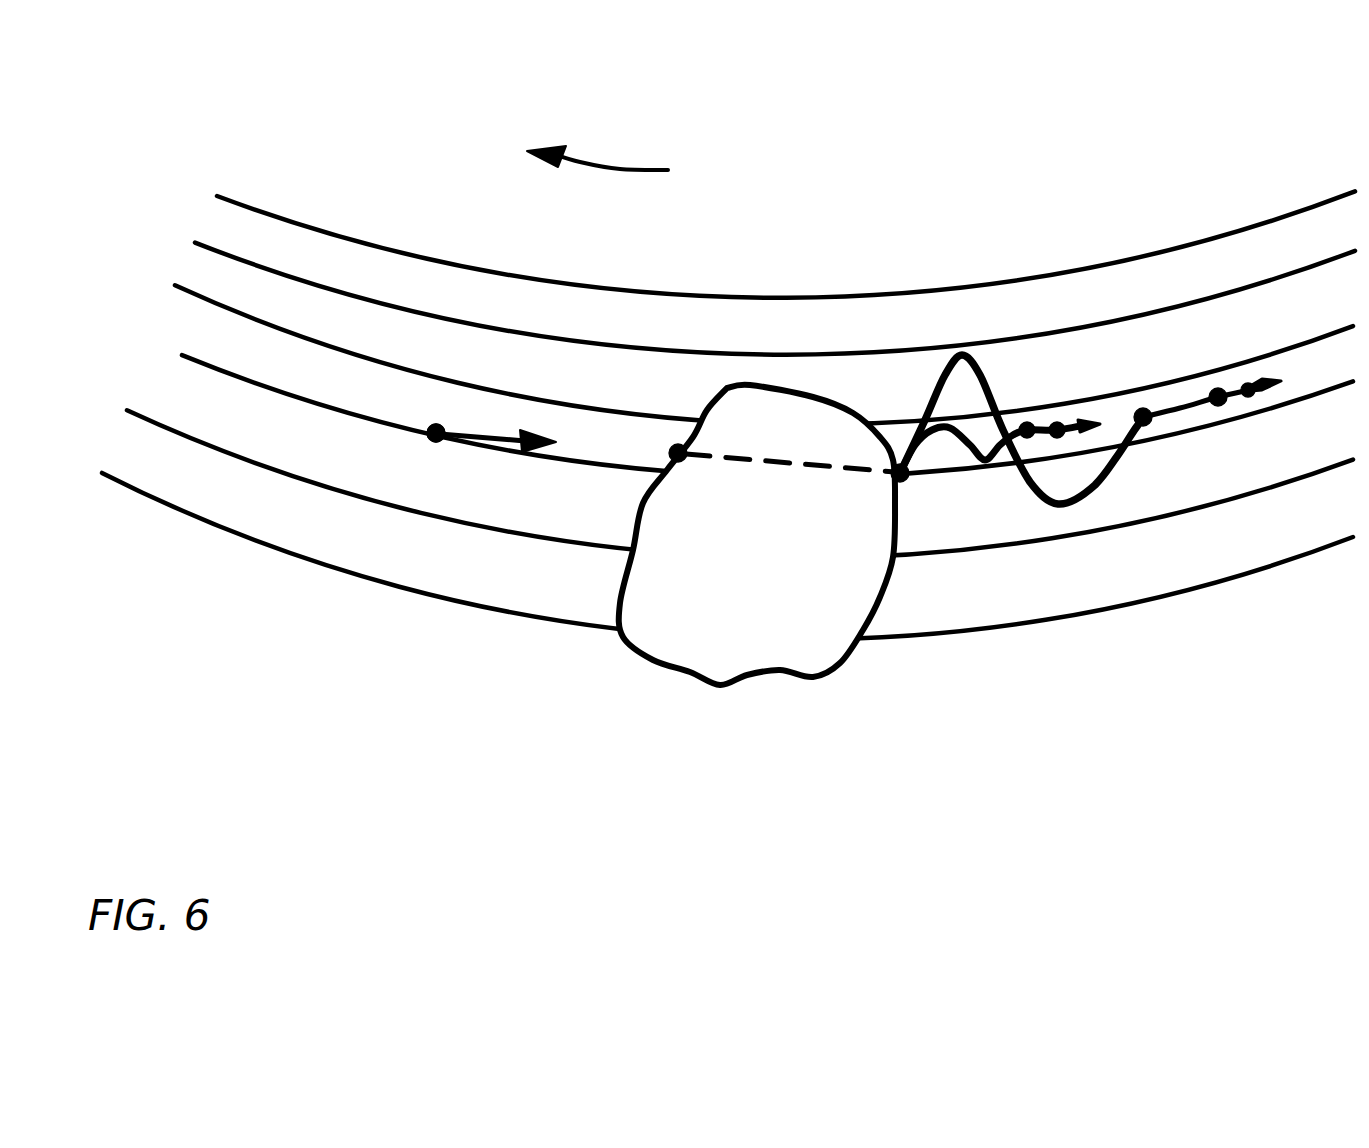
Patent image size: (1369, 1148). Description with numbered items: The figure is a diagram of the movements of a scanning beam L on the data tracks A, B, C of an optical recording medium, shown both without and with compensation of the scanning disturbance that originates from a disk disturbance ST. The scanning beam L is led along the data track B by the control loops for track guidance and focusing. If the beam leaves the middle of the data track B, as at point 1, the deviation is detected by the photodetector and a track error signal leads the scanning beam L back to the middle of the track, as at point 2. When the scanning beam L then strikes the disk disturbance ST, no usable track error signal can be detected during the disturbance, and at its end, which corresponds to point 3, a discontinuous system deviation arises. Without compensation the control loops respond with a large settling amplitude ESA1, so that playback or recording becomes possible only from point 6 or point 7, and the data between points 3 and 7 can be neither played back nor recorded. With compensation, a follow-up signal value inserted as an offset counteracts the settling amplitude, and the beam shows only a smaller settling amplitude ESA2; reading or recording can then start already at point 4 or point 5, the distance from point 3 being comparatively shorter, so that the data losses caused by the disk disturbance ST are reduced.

The data track A is at (699, 497).
The data track B is at (725, 344).
The data track C is at (749, 264).
The disk disturbance ST is at (670, 680).
The scanning beam L is at (437, 445).
The settling amplitude ESA1 is at (962, 355).
The settling amplitude ESA2 is at (942, 440).
The point 1 is at (490, 416).
The point 2 is at (760, 448).
The point 3 is at (880, 495).
The point 4 is at (1026, 404).
The point 5 is at (1060, 401).
The point 6 is at (1189, 387).
The point 7 is at (1243, 369).